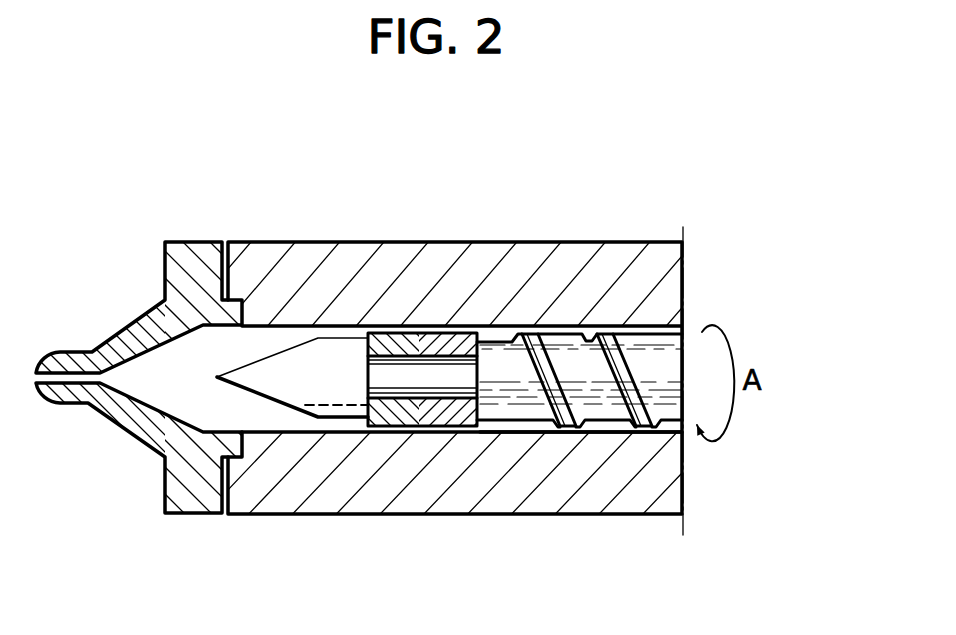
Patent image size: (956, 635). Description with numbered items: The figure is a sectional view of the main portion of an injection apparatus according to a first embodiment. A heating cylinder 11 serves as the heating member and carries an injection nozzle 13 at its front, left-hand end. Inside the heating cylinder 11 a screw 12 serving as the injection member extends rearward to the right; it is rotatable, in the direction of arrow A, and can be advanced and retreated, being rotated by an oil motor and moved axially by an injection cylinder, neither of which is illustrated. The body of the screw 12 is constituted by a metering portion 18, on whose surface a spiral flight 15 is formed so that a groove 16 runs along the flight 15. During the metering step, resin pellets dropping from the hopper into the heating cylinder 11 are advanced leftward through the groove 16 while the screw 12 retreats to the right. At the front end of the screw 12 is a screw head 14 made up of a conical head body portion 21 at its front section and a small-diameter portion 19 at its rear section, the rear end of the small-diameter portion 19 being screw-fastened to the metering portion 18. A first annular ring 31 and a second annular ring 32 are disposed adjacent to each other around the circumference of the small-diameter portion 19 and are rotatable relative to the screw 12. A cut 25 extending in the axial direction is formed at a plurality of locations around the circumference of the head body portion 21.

The heating cylinder 11 is at (537, 243).
The screw 12 is at (612, 370).
The injection nozzle 13 is at (203, 243).
The screw head 14 is at (302, 367).
The spiral flight 15 is at (628, 336).
The groove 16 is at (607, 429).
The metering portion 18 is at (530, 400).
The small-diameter portion 19 is at (400, 387).
The conical head body portion 21 is at (318, 392).
The cut 25 is at (343, 410).
The first annular ring 31 is at (450, 340).
The second annular ring 32 is at (397, 337).